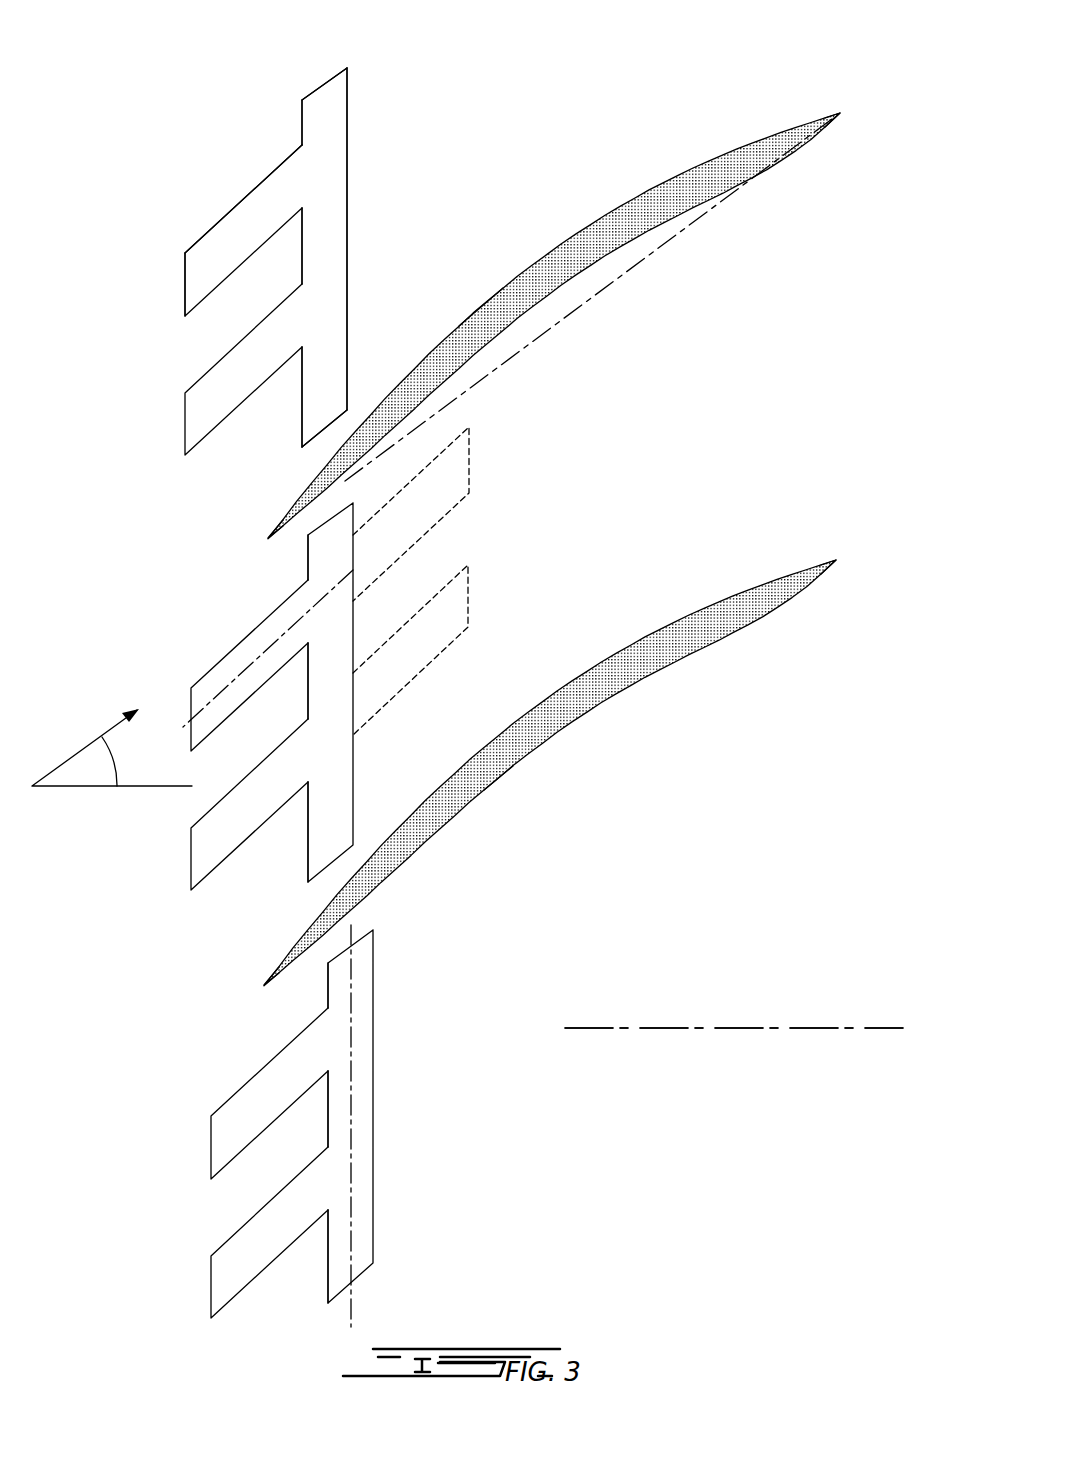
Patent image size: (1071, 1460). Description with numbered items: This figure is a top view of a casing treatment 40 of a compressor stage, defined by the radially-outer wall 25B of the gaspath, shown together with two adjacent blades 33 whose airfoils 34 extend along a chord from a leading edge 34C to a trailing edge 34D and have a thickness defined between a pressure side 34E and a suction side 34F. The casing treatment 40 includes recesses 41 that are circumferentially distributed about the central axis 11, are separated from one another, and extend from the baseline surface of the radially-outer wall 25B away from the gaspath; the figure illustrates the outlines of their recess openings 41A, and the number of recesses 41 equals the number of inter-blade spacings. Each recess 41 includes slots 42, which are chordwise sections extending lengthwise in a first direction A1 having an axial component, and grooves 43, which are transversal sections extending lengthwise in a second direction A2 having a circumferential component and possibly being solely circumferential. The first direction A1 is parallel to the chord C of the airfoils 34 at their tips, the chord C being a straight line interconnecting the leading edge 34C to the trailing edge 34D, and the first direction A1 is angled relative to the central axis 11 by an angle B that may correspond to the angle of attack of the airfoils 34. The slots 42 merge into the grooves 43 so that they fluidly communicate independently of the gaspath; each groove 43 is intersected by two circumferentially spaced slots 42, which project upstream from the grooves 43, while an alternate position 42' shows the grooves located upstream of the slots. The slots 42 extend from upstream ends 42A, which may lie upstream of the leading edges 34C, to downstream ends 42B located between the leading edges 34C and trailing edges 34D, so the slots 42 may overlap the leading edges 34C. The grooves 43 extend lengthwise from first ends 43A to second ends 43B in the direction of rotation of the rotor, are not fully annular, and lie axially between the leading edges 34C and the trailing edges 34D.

The casing treatment 40 is at (222, 86).
The recesses 41 is at (326, 82).
The recess openings 41A is at (348, 287).
The slots 42 is at (225, 731).
The alternate position of the slots 42' is at (458, 581).
The upstream ends 42A is at (185, 287).
The downstream ends 42B is at (298, 178).
The grooves 43 is at (324, 232).
The first ends 43A is at (330, 96).
The second ends 43B is at (327, 425).
The blades 33 is at (518, 526).
The airfoils 34 is at (610, 253).
The leading edge 34C is at (268, 540).
The trailing edge 34D is at (840, 113).
The pressure side 34E is at (494, 786).
The suction side 34F is at (478, 310).
The chord C is at (563, 327).
The first direction A1 is at (228, 687).
The second direction A2 is at (350, 1193).
The angle B is at (112, 747).
The radially-outer wall 25B is at (611, 951).
The central axis 11 is at (798, 1028).